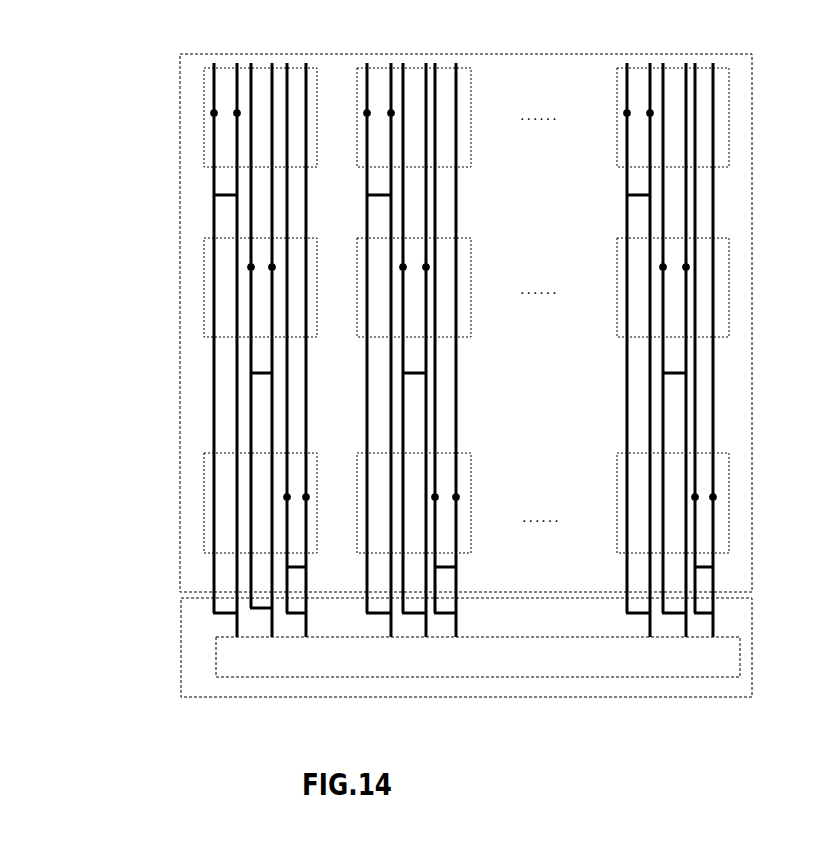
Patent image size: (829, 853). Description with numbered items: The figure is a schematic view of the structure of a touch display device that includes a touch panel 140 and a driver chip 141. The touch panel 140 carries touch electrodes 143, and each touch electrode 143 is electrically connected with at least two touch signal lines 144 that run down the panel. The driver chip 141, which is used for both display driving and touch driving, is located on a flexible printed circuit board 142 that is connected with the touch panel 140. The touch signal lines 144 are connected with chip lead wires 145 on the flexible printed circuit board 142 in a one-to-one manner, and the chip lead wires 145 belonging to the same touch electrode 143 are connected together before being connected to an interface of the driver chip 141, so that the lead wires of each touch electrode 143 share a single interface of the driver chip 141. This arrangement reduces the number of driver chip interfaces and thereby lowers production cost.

The touch panel 140 is at (180, 77).
The driver chip 141 is at (216, 657).
The flexible printed circuit board 142 is at (180, 648).
The touch electrode 143 is at (205, 117).
The touch signal lines 144 is at (213, 218).
The chip lead wires 145 is at (215, 607).